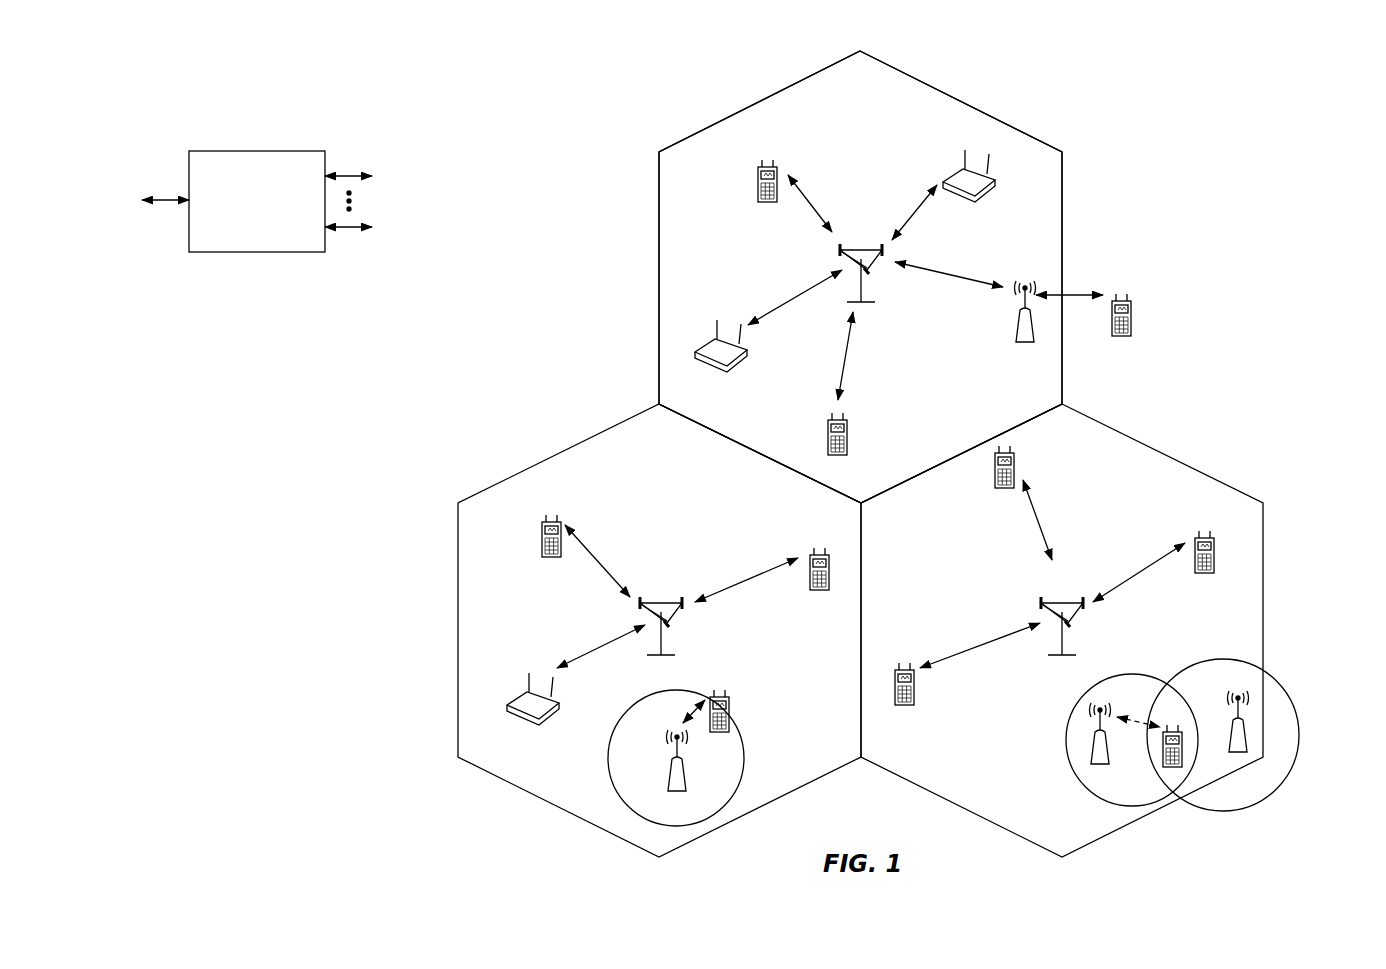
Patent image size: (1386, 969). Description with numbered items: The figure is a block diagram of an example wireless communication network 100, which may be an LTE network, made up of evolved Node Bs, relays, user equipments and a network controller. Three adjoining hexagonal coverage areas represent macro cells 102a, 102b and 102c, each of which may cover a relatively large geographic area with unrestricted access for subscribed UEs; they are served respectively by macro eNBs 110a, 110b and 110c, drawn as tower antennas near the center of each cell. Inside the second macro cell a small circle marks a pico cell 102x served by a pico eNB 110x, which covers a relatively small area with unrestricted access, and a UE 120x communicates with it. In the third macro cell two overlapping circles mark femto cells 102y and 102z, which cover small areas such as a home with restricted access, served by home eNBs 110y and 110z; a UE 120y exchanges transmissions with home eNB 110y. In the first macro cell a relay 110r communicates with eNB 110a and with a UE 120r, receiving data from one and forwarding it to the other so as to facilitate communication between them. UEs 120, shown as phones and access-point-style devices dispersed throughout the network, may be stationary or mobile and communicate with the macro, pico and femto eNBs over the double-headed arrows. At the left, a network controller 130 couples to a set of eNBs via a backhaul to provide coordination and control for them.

The wireless network 100 is at (1203, 110).
The macro cell 102a is at (958, 102).
The macro cell 102b is at (557, 453).
The macro cell 102c is at (1160, 452).
The pico cell 102x is at (628, 709).
The femto cell 102y is at (1071, 708).
The femto cell 102z is at (1217, 657).
The macro eNB 110a is at (852, 249).
The macro eNB 110b is at (655, 602).
The macro eNB 110c is at (1058, 602).
The relay 110r is at (1014, 331).
The pico eNB 110x is at (685, 780).
The home eNB 110y is at (1108, 757).
The home eNB 110z is at (1246, 742).
The UE 120 is at (758, 179).
The UE 120r is at (1131, 332).
The UE 120x is at (729, 707).
The UE 120y is at (1163, 760).
The network controller 130 is at (253, 151).